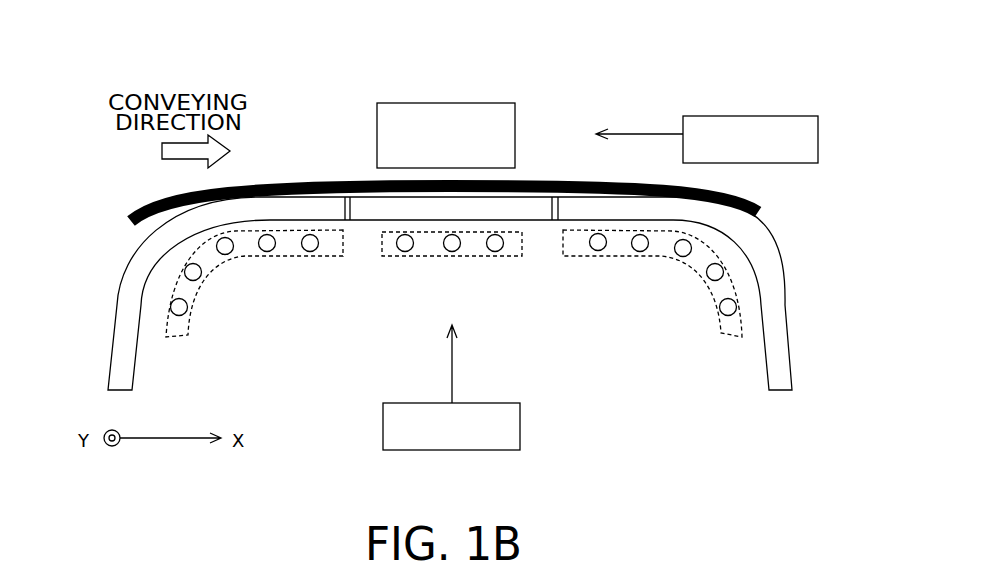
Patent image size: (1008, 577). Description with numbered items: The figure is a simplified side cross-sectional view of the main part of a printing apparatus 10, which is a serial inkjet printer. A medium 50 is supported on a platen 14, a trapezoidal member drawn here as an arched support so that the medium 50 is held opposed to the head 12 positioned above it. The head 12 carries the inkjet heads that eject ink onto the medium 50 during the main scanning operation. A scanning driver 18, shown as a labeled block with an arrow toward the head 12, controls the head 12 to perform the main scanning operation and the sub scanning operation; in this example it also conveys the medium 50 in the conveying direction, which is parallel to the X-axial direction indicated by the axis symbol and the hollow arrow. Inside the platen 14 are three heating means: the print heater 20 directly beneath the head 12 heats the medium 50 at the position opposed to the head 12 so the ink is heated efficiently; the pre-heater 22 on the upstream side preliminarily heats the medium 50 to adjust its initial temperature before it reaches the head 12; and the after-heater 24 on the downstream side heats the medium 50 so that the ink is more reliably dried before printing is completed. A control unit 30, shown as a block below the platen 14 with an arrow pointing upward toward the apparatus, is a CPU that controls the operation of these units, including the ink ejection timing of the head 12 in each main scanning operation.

The printing apparatus 10 is at (100, 163).
The head 12 is at (515, 115).
The platen 14 is at (540, 221).
The scanning driver 18 is at (743, 116).
The print heater 20 is at (387, 254).
The pre-heater 22 is at (182, 333).
The after-heater 24 is at (740, 337).
The control unit 30 is at (383, 434).
The medium 50 is at (277, 180).